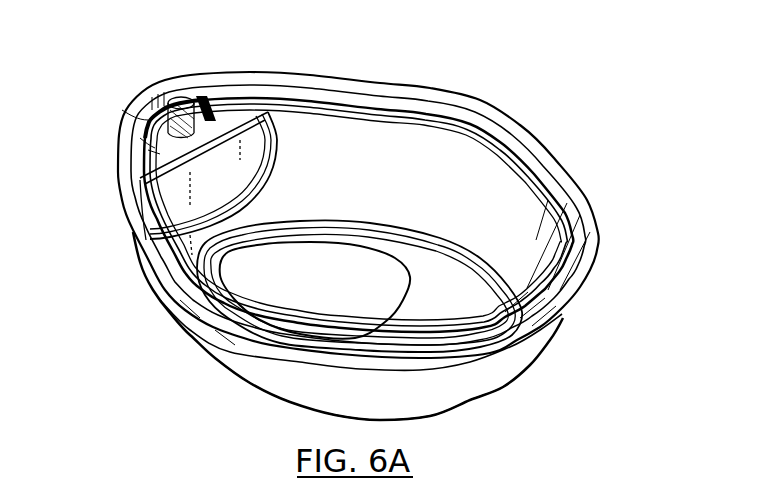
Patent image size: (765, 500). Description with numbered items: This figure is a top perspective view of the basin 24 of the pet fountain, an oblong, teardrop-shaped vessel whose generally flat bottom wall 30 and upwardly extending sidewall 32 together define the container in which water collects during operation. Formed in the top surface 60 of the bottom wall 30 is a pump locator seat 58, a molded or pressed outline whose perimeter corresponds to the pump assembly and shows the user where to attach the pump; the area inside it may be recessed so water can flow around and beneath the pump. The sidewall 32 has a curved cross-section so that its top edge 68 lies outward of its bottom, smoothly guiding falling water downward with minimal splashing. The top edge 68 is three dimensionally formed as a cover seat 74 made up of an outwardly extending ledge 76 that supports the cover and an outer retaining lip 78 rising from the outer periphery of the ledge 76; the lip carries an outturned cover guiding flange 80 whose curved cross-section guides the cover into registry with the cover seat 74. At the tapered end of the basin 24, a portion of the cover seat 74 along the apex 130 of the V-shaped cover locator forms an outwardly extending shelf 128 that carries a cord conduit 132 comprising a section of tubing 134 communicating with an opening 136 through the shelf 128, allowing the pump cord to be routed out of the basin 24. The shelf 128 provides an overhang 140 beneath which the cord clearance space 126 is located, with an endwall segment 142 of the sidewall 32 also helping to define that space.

The basin 24 is at (552, 368).
The bottom wall 30 is at (478, 292).
The sidewall 32 is at (567, 317).
The pump locator seat 58 is at (330, 285).
The top surface 60 is at (462, 314).
The top edge 68 is at (622, 197).
The cover seat 74 is at (491, 130).
The ledge 76 is at (530, 170).
The outer retaining lip 78 is at (512, 144).
The cover guiding flange 80 is at (116, 94).
The cord clearance space 126 is at (116, 200).
The shelf 128 is at (137, 139).
The apex 130 is at (152, 90).
The cord conduit 132 is at (212, 104).
The section of tubing 134 is at (185, 97).
The opening 136 is at (122, 110).
The overhang 140 is at (117, 170).
The endwall segment 142 is at (232, 178).